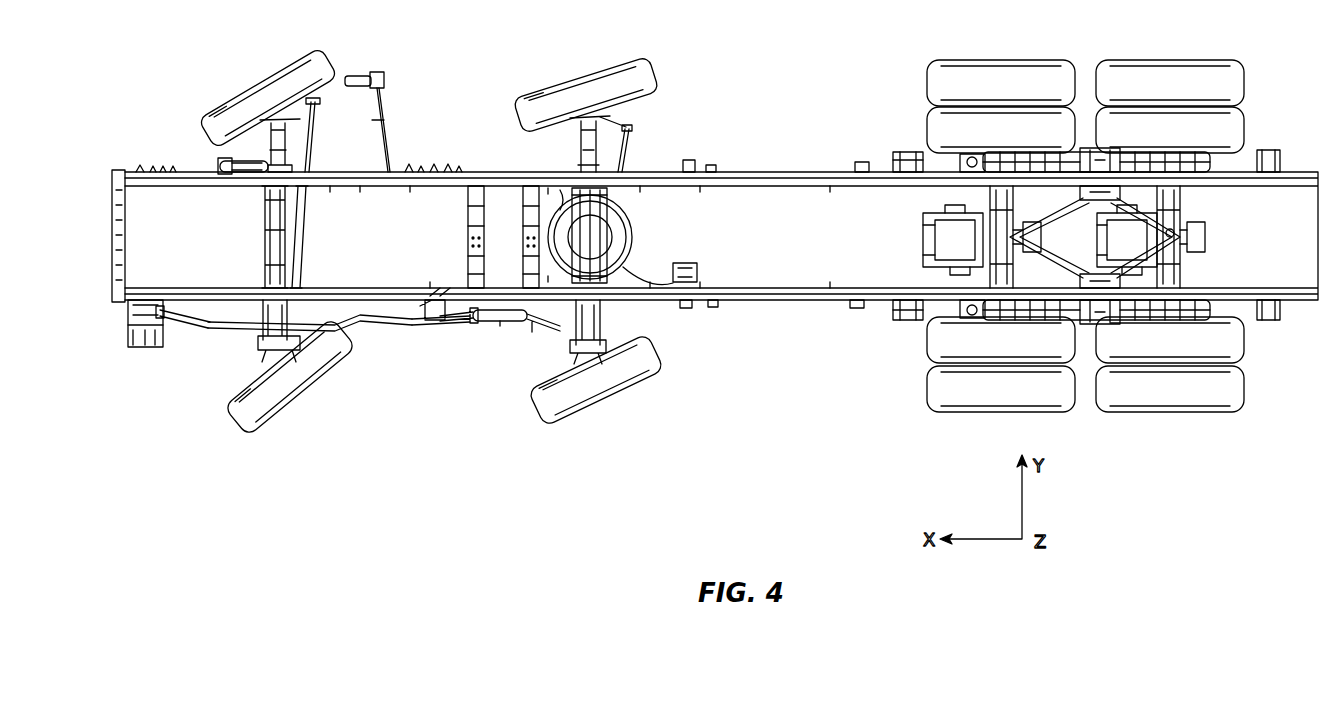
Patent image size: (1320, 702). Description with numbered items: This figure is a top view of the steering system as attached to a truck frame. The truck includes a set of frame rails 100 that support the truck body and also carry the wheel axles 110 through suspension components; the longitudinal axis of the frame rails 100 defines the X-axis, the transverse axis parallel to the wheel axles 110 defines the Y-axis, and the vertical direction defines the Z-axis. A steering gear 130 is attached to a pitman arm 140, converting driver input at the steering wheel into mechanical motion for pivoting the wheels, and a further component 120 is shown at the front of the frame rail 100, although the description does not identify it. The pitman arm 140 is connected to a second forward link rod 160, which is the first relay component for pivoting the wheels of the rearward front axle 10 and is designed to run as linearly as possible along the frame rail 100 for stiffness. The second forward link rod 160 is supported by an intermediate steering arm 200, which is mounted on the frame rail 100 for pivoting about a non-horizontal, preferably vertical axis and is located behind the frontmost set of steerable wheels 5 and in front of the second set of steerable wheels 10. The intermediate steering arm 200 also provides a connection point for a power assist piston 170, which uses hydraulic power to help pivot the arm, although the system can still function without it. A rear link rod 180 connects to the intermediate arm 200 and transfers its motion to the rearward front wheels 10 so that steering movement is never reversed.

The frontmost set of steerable wheels 5 is at (282, 433).
The second set of steerable wheels 10 is at (639, 411).
The frame rails 100 is at (697, 178).
The wheel axles 110 is at (272, 237).
The steering gear 120 is at (267, 167).
The steering gear 130 is at (150, 348).
The pitman arm 140 is at (166, 320).
The second forward link rod 160 is at (373, 330).
The power assist piston 170 is at (493, 313).
The rear link rod 180 is at (540, 328).
The intermediate steering arm 200 is at (413, 323).